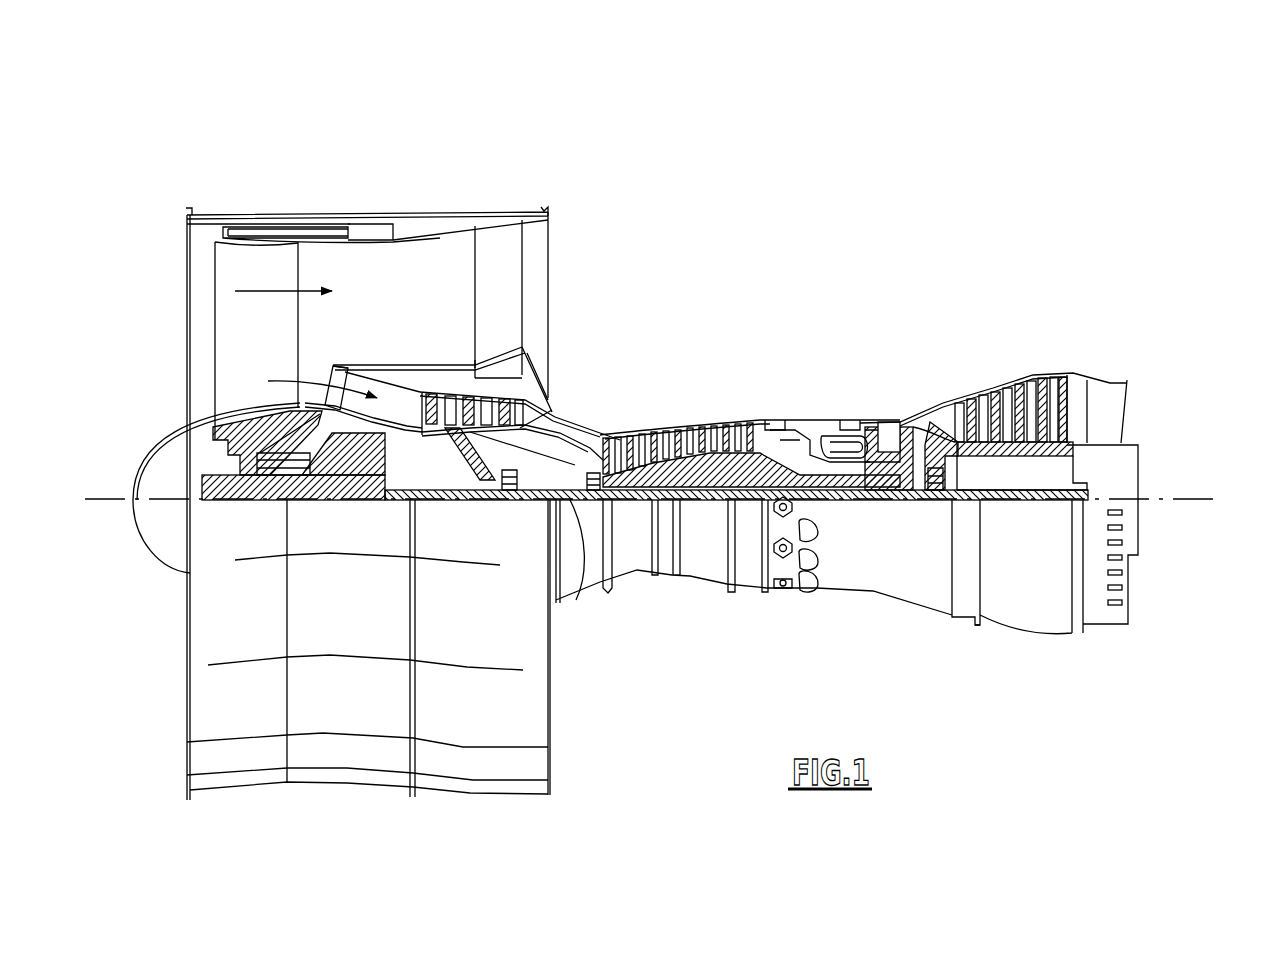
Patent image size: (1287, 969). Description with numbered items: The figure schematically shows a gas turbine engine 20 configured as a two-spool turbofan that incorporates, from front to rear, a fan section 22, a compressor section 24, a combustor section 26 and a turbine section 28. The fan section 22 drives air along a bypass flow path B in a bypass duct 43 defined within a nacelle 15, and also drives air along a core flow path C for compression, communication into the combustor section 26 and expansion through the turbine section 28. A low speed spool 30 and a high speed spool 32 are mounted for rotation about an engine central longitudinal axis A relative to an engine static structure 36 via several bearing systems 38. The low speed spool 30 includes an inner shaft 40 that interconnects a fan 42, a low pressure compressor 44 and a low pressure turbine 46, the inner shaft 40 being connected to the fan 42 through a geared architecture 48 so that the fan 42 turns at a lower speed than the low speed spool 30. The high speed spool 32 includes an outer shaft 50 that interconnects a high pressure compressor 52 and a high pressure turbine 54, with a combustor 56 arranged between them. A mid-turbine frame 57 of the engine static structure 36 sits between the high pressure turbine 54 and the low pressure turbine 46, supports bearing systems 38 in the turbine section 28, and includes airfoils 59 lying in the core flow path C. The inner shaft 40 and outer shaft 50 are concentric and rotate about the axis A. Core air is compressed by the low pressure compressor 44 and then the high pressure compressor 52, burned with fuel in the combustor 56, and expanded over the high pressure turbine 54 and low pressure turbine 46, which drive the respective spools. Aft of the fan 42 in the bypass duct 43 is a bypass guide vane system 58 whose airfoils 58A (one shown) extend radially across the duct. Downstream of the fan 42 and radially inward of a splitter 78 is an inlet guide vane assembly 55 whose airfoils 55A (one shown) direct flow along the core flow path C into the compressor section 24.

The gas turbine engine 20 is at (830, 268).
The fan section 22 is at (298, 210).
The nacelle 15 is at (368, 220).
The bypass duct 43 is at (446, 231).
The fan 42 is at (270, 347).
The bypass guide vane system 58 is at (526, 270).
The airfoil 58A is at (521, 313).
The inlet guide vane assembly 55 is at (325, 372).
The splitter 78 is at (334, 366).
The airfoil 55A is at (348, 380).
The low pressure compressor 44 is at (488, 396).
The compressor section 24 is at (599, 410).
The geared architecture 48 is at (379, 492).
The bearing systems 38 is at (505, 490).
The inner shaft 40 is at (577, 600).
The low speed spool 30 is at (710, 506).
The engine static structure 36 is at (748, 590).
The outer shaft 50 is at (828, 485).
The high pressure compressor 52 is at (683, 472).
The high speed spool 32 is at (752, 447).
The combustor section 26 is at (822, 397).
The combustor 56 is at (828, 440).
The high pressure turbine 54 is at (888, 427).
The mid-turbine frame 57 is at (934, 408).
The turbine section 28 is at (969, 358).
The low pressure turbine 46 is at (1015, 392).
The airfoils 59 is at (953, 460).
The engine central longitudinal axis A is at (1222, 499).
The bypass flow path B is at (272, 290).
The core flow path C is at (314, 382).